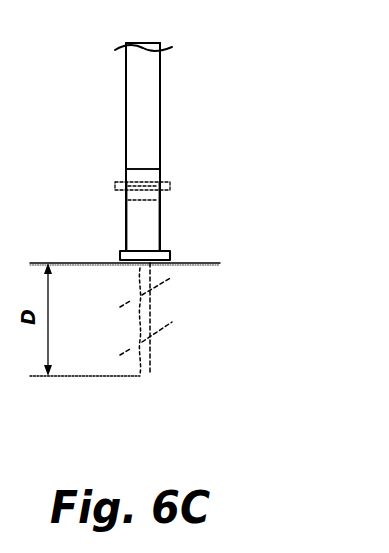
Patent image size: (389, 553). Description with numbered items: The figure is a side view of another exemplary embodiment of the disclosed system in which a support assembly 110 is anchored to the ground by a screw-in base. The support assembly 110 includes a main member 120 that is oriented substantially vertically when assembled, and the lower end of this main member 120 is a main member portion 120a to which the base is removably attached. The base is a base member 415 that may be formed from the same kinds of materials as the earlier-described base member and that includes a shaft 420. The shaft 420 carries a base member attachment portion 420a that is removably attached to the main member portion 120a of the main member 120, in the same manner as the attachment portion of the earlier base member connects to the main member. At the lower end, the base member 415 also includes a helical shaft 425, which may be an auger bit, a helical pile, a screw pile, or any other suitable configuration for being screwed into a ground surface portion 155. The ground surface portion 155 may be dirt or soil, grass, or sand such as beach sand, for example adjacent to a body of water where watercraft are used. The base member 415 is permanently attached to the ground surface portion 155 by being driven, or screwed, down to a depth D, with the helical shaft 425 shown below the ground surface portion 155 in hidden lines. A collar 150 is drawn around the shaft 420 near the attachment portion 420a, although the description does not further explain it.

The support assembly 110 is at (106, 82).
The main member 120 is at (145, 102).
The main member portion 120a is at (180, 143).
The collar 150 is at (182, 173).
The base member 415 is at (187, 206).
The shaft 420 is at (137, 229).
The base member attachment portion 420a is at (137, 175).
The ground surface portion 155 is at (200, 263).
The helical shaft 425 is at (187, 308).